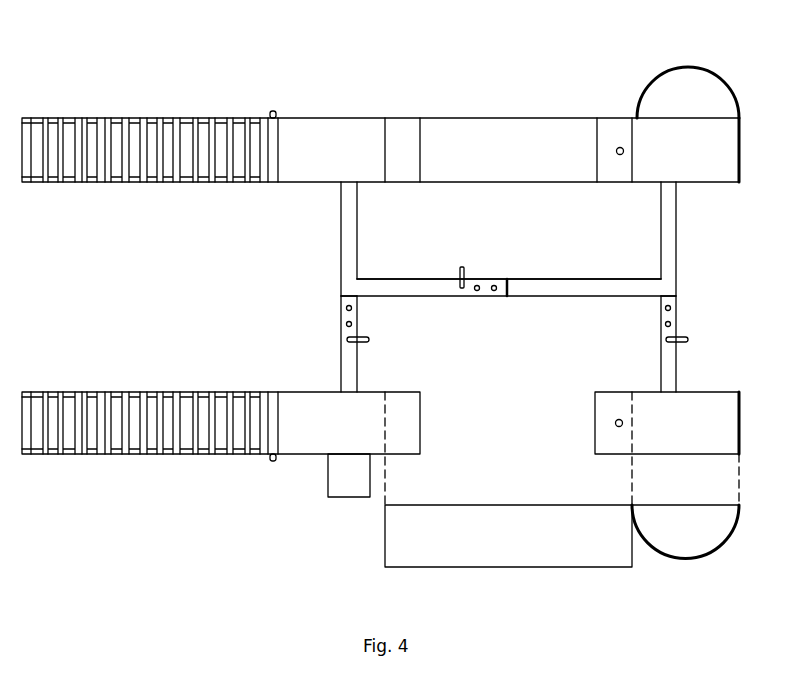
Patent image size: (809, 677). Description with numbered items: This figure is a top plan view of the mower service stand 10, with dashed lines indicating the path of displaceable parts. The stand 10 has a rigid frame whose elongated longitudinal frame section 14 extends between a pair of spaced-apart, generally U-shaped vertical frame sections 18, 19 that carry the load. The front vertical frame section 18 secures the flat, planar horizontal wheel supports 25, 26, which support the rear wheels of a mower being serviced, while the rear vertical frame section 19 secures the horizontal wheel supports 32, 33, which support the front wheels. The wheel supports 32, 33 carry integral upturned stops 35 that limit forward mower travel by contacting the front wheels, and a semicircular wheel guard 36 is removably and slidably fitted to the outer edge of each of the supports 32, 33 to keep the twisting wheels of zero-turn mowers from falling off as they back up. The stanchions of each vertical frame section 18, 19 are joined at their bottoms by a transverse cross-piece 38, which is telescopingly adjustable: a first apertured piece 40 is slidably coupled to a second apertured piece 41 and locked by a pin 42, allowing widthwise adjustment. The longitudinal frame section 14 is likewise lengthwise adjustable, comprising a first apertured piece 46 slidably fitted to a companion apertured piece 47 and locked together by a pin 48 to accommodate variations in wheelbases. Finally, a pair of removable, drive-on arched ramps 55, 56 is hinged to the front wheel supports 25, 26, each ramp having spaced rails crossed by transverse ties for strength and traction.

The stand 10 is at (545, 64).
The longitudinal frame section 14 is at (523, 267).
The vertical frame section 18 is at (331, 228).
The vertical frame section 19 is at (709, 301).
The horizontal wheel support 25 is at (351, 136).
The horizontal wheel support 26 is at (316, 436).
The horizontal wheel support 32 is at (706, 142).
The horizontal wheel support 33 is at (718, 426).
The upturned stop 35 is at (739, 160).
The wheel guard 36 is at (668, 73).
The transverse cross-piece 38 is at (332, 283).
The first apertured piece 40 is at (667, 222).
The second apertured piece 41 is at (670, 363).
The pin 42 is at (690, 339).
The first apertured piece 46 is at (408, 290).
The companion apertured piece 47 is at (519, 290).
The pin 48 is at (462, 266).
The arched ramp 55 is at (200, 194).
The arched ramp 56 is at (187, 472).